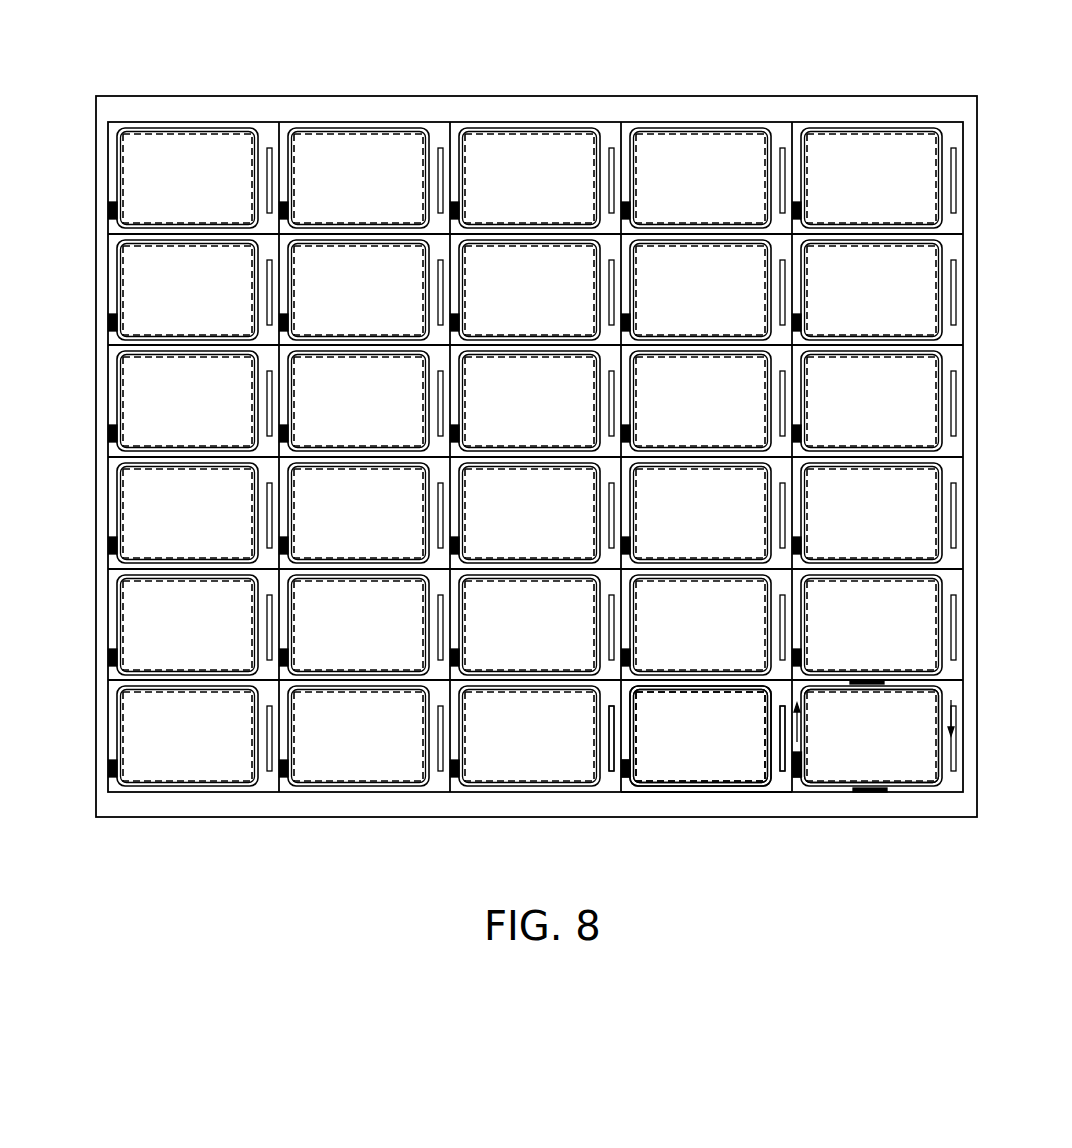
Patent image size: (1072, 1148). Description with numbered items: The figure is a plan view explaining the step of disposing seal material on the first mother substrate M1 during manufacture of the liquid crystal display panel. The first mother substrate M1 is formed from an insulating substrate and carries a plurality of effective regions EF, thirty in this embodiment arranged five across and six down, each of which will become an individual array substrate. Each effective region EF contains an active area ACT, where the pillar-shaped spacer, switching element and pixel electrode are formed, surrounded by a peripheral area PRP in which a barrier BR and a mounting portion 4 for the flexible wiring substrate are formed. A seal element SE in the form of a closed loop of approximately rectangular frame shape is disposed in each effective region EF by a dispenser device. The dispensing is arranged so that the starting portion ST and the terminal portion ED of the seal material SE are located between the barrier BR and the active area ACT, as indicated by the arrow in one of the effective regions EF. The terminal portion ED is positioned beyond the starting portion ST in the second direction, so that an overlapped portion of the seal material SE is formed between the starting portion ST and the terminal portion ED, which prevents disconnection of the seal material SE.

The first mother substrate M1 is at (982, 118).
The mounting portion 4 is at (614, 772).
The barrier BR is at (628, 778).
The active area ACT is at (668, 775).
The peripheral area PRP is at (697, 788).
The seal material SE is at (738, 788).
The effective region EF is at (763, 793).
The terminal portion ED is at (806, 760).
The starting portion ST is at (810, 768).